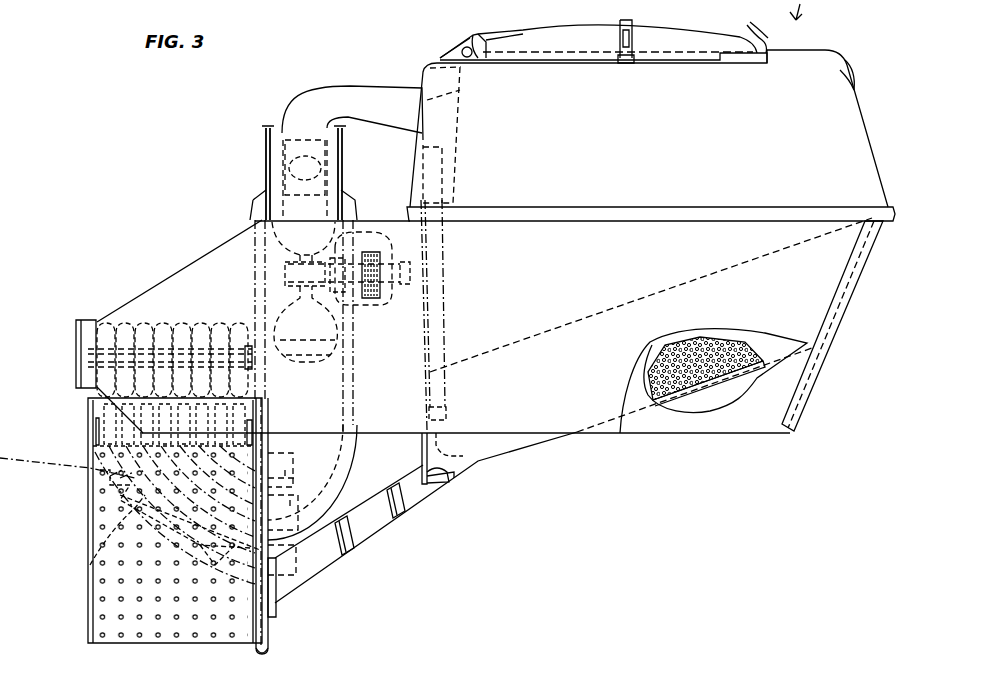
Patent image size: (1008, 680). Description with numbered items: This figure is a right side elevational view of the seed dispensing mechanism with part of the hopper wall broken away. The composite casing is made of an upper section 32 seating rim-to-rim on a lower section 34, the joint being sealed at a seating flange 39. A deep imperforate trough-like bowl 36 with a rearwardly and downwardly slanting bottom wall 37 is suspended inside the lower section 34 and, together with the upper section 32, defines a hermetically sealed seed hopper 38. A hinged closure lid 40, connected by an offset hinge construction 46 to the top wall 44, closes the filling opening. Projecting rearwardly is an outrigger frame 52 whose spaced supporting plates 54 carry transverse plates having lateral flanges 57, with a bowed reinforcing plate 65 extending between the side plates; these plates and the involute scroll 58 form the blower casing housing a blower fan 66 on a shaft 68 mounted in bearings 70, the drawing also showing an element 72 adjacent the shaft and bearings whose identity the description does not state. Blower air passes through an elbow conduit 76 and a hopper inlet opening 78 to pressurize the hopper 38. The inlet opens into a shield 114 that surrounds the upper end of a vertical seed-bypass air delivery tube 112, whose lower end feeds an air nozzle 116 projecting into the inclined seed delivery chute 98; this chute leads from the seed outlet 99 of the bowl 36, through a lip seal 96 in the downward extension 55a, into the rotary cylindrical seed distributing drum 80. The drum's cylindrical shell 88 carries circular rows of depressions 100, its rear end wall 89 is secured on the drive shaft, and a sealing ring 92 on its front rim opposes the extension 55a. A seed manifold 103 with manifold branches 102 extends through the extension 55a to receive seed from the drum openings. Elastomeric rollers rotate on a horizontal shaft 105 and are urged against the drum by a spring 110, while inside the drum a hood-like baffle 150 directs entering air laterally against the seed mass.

The upper section 32 is at (848, 130).
The lower section 34 is at (810, 330).
The trough-like bowl 36 is at (513, 460).
The bottom wall 37 is at (428, 350).
The seed hopper 38 is at (712, 334).
The seating flange 39 is at (790, 214).
The hinged closure lid 40 is at (648, 36).
The top wall 44 is at (815, 50).
The offset hinge construction 46 is at (490, 36).
The outrigger frame 52 is at (274, 326).
The supporting plates 54 is at (212, 256).
The downward extension 55a is at (270, 628).
The lateral flanges 57 is at (258, 198).
The involute blower side wall or scroll 58 is at (270, 158).
The reinforcing plate 65 is at (76, 344).
The blower fan 66 is at (296, 370).
The shaft 68 is at (338, 300).
The bearings 70 is at (356, 246).
The motor rotor 72 is at (370, 302).
The elbow conduit 76 is at (352, 92).
The hopper inlet opening 78 is at (450, 94).
The rotary cylindrical seed distributing drum 80 is at (82, 448).
The cylindrical shell 88 is at (95, 538).
The rear end wall 89 is at (96, 514).
The sealing ring 92 is at (268, 652).
The lip seal 96 is at (280, 600).
The seed delivery chute 98 is at (376, 530).
The seed outlet 99 is at (443, 476).
The depressions 100 is at (178, 612).
The manifold branches 102 is at (300, 470).
The seed manifold 103 is at (95, 488).
The horizontal shaft 105 is at (118, 322).
The spring 110 is at (142, 323).
The seed-bypass air delivery tube 112 is at (445, 308).
The shield 114 is at (456, 124).
The air nozzle 116 is at (438, 453).
The hood-like baffle 150 is at (98, 566).